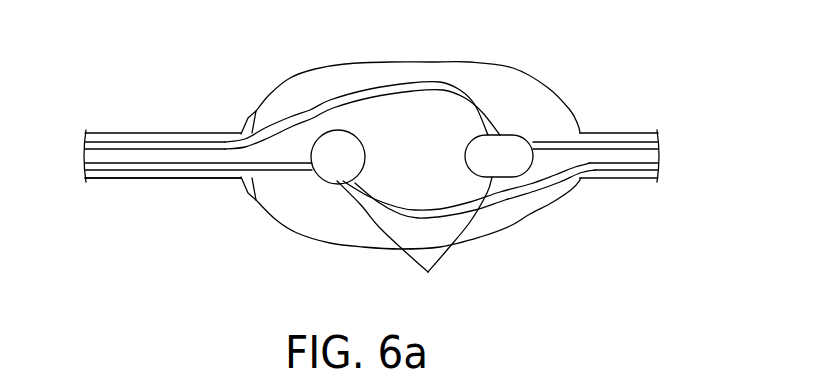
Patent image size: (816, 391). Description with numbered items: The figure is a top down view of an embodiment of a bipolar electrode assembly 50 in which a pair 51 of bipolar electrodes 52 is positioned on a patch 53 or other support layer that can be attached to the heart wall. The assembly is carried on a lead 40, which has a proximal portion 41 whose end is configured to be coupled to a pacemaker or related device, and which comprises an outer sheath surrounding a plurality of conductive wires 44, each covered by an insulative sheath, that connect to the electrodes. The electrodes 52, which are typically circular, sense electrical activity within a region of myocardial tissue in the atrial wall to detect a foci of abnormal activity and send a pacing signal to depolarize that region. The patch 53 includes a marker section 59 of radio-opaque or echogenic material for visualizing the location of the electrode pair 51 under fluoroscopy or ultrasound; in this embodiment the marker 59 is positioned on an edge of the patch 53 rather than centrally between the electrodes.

The lead 40 is at (85, 152).
The proximal portion 41 is at (128, 180).
The conductive wires 44 is at (327, 108).
The electrode assembly 50 is at (508, 68).
The pair of bipolar electrodes 51 is at (414, 240).
The bipolar electrodes 52 is at (352, 168).
The patch 53 is at (305, 228).
The marker section 59 is at (240, 125).